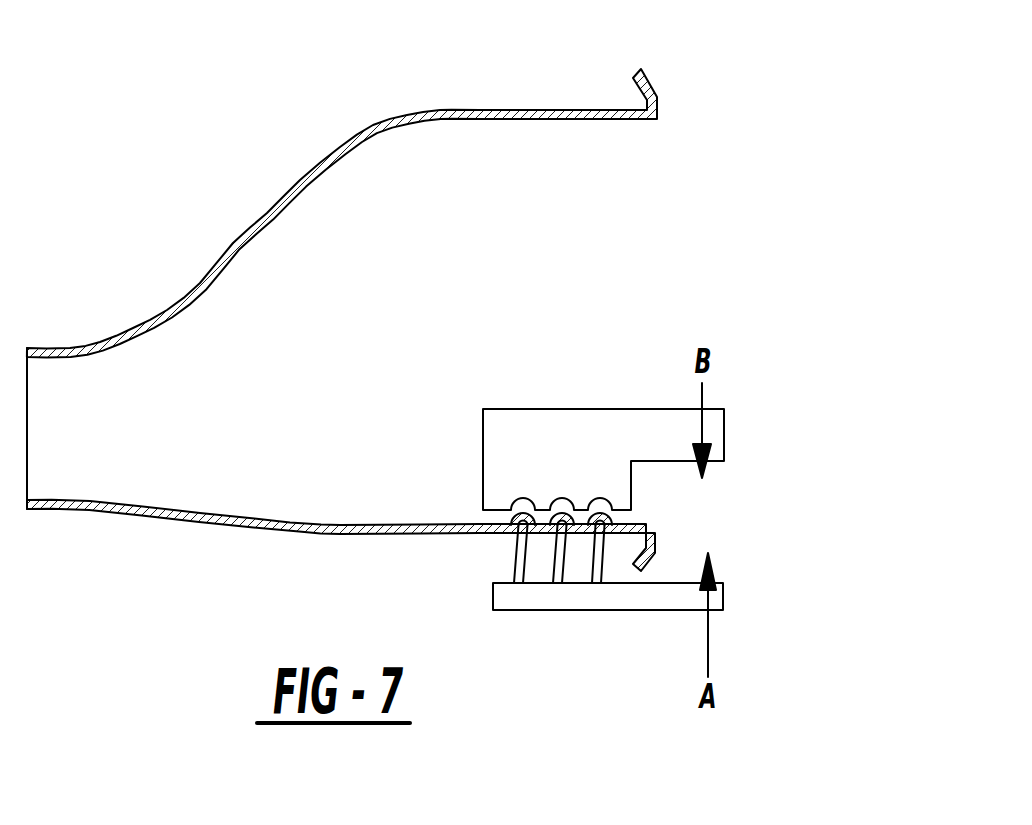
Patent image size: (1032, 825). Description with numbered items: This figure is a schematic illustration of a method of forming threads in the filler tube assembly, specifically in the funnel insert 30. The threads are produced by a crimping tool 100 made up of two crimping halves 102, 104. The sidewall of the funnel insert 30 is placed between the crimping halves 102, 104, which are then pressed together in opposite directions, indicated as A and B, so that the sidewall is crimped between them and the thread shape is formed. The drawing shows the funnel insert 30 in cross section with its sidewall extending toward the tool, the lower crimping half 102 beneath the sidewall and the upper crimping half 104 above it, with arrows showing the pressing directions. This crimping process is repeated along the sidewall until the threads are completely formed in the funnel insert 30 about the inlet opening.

The funnel insert 30 is at (383, 124).
The crimping tool 100 is at (713, 498).
The crimping half 104 is at (582, 467).
The crimping half 102 is at (583, 597).